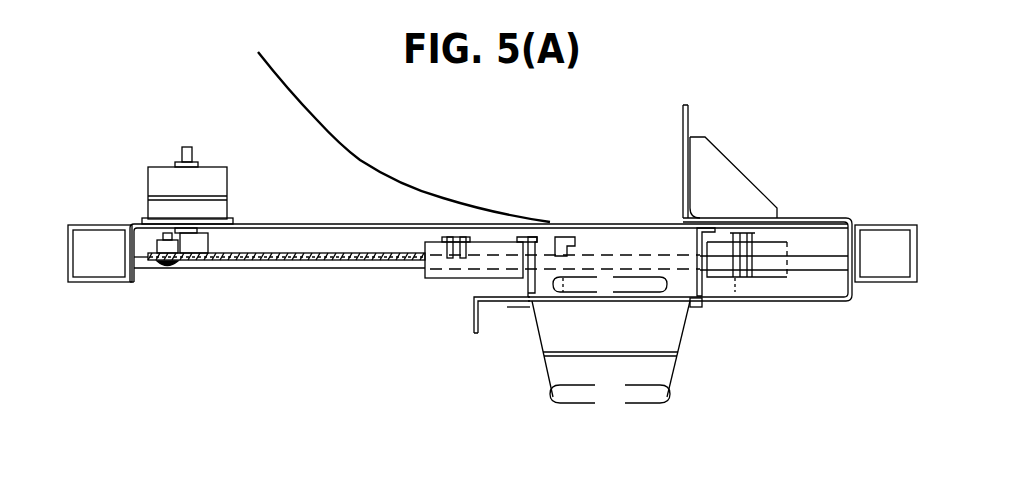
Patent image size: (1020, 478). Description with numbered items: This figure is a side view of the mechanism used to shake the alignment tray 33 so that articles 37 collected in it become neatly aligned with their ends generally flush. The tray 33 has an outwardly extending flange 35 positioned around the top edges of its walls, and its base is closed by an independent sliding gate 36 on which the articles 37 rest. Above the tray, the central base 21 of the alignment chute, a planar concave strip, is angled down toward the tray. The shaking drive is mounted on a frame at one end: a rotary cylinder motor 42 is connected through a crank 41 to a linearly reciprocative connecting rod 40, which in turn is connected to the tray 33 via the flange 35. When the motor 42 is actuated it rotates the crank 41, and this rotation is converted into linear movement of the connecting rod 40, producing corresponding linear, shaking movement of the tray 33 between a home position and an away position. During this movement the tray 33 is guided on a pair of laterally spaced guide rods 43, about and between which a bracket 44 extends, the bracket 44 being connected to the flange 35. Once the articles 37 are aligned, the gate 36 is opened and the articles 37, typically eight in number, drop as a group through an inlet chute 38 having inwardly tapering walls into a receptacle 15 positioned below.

The receptacle 15 is at (546, 380).
The central base 21 is at (318, 121).
The tray 33 is at (538, 241).
The flange 35 is at (482, 241).
The sliding gate 36 is at (702, 301).
The articles 37 is at (613, 280).
The inlet chute 38 is at (539, 338).
The connecting rod 40 is at (315, 249).
The crank 41 is at (187, 262).
The rotary cylinder motor 42 is at (164, 183).
The guide rods 43 is at (287, 271).
The bracket 44 is at (752, 280).